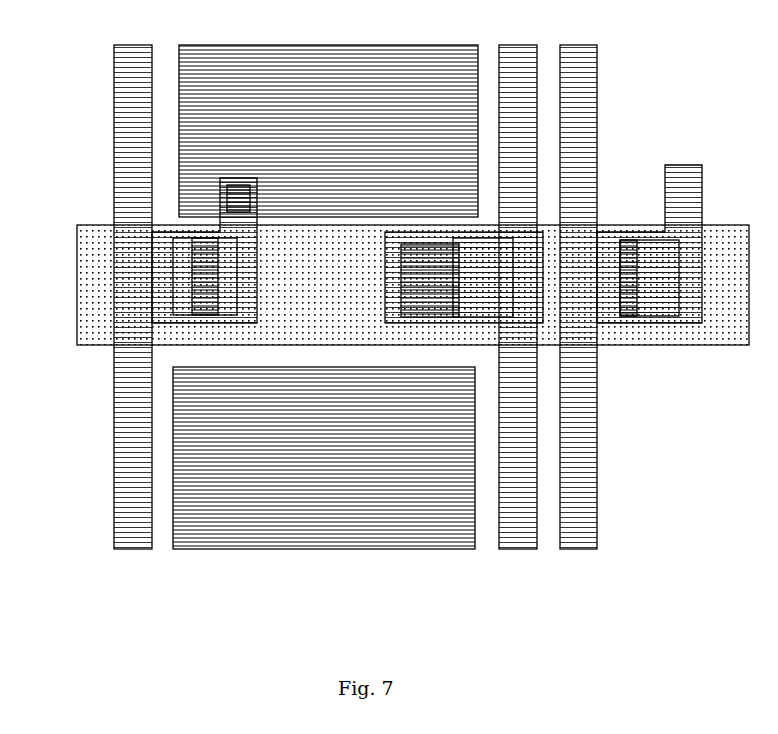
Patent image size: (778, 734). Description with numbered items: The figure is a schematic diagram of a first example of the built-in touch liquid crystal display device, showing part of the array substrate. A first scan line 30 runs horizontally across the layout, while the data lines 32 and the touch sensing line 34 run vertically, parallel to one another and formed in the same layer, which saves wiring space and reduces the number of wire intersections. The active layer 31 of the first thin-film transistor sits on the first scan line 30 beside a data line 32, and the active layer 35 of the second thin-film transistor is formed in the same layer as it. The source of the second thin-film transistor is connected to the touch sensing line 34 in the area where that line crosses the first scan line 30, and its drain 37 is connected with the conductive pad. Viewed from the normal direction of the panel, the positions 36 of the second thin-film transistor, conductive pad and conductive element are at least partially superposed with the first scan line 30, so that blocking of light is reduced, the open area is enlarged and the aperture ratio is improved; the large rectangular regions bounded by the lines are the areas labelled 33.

The first scan line 30 is at (103, 308).
The active layer of the first thin-film transistor 31 is at (200, 268).
The data lines 32 is at (135, 142).
The pixel electrode 33 is at (207, 105).
The touch sensing line 34 is at (528, 160).
The active layer of the second thin-film transistor 35 is at (488, 295).
The positions of the second thin-film transistor, the conductive pad and the conduct 36 is at (450, 318).
The drain of the second thin-film transistor 37 is at (390, 298).